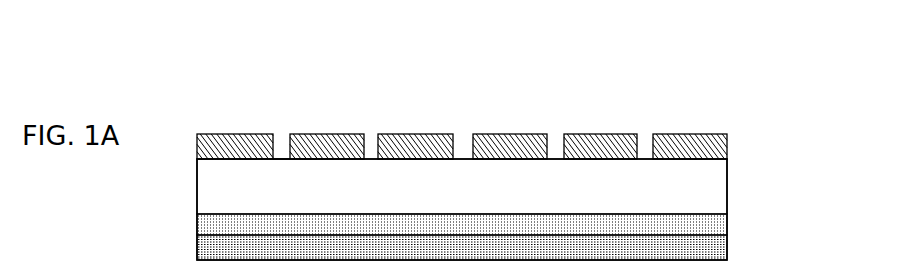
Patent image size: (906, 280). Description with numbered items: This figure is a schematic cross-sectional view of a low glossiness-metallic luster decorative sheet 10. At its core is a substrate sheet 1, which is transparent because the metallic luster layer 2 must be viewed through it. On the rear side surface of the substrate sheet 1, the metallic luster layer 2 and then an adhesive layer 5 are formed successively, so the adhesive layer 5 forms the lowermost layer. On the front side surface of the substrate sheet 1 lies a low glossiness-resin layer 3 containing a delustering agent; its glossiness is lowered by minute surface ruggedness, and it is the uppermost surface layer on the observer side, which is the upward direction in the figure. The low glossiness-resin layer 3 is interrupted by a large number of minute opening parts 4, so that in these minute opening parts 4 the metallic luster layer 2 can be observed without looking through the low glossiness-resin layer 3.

The low glossiness-metallic luster decorative sheet 10 is at (632, 98).
The substrate sheet 1 is at (702, 185).
The metallic luster layer 2 is at (702, 223).
The adhesive layer 5 is at (702, 250).
The low glossiness-resin layer 3 is at (705, 143).
The minute opening parts 4 is at (285, 142).